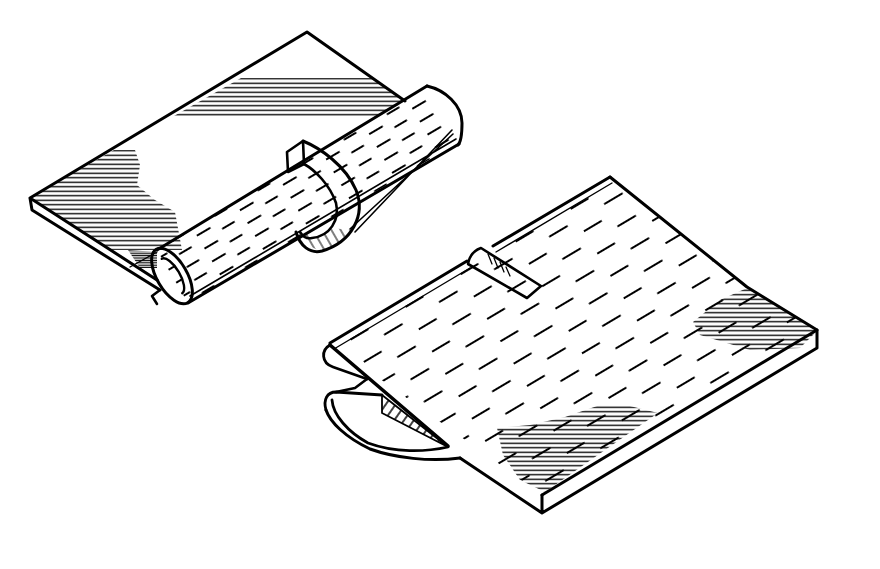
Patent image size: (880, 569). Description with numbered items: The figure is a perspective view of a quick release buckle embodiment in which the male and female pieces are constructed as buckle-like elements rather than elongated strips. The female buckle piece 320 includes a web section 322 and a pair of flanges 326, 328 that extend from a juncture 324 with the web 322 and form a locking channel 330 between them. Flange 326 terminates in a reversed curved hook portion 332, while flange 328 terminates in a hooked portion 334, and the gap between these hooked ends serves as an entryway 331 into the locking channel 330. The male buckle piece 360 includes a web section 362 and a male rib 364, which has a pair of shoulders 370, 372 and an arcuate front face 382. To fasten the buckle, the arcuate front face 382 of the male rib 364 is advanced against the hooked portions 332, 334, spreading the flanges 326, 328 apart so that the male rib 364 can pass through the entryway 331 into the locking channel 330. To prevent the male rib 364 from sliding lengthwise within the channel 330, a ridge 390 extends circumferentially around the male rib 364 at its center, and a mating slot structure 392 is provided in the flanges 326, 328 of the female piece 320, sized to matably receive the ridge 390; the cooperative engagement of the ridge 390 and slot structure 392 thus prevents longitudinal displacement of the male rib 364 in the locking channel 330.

The male buckle piece 360 is at (476, 61).
The web section 362 is at (197, 123).
The male rib 364 is at (447, 117).
The arcuate front face 382 is at (437, 163).
The ridge 390 is at (337, 217).
The slot structure 392 is at (487, 238).
The shoulder 370 is at (133, 263).
The shoulder 372 is at (160, 298).
The female buckle piece 320 is at (708, 188).
The web section 322 is at (640, 392).
The juncture 324 is at (457, 455).
The flange 326 is at (620, 207).
The flange 328 is at (397, 457).
The locking channel 330 is at (368, 422).
The entryway 331 is at (323, 379).
The reversed curved hook portion 332 is at (327, 345).
The hooked portion 334 is at (330, 414).